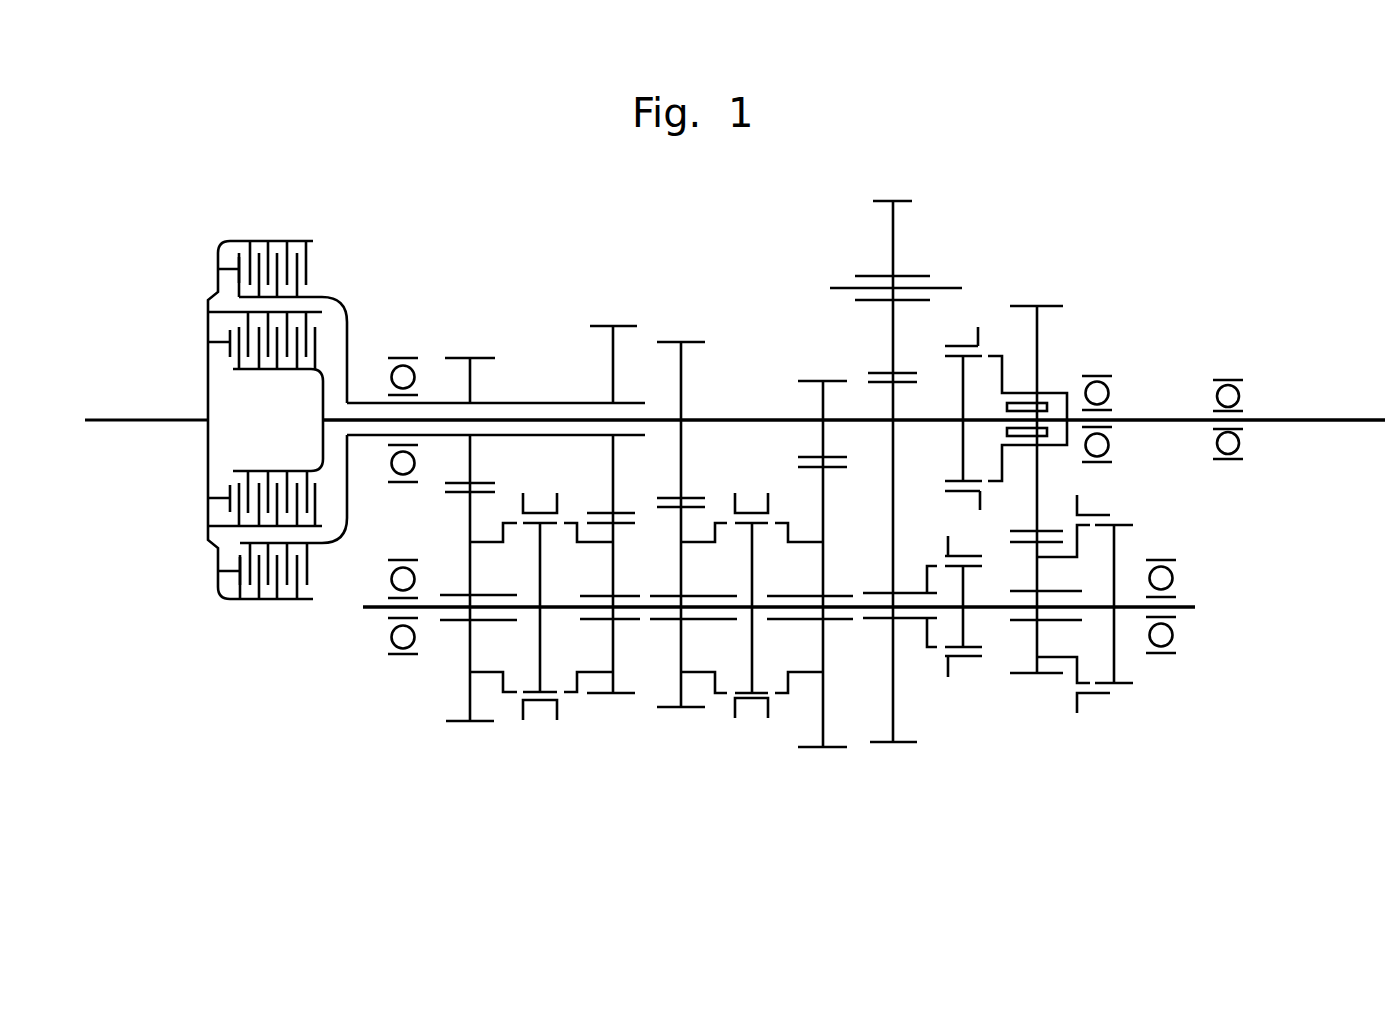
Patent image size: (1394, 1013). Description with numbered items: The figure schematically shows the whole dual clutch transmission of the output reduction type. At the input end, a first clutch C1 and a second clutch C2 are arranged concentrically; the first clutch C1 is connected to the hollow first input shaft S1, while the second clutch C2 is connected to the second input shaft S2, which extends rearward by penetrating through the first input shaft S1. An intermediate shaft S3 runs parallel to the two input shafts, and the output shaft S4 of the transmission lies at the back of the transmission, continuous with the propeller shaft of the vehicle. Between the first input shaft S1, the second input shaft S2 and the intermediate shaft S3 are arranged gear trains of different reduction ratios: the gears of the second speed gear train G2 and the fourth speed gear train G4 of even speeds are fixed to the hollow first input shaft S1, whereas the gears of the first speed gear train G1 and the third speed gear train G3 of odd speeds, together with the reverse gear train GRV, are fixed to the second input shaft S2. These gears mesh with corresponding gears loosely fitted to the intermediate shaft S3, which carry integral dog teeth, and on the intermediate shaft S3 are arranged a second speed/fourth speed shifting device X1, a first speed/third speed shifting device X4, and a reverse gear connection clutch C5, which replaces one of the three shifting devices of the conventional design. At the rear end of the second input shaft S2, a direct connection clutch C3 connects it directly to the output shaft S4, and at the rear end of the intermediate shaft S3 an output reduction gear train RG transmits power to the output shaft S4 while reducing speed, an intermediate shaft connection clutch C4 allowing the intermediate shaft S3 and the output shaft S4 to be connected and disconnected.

The first clutch C1 is at (280, 252).
The second clutch C2 is at (240, 327).
The direct connection clutch C3 is at (978, 327).
The intermediate shaft connection clutch C4 is at (1097, 697).
The reverse gear connection clutch C5 is at (955, 660).
The first input shaft S1 is at (533, 403).
The second input shaft S2 is at (733, 418).
The intermediate shaft S3 is at (375, 612).
The output shaft S4 is at (1282, 418).
The first speed gear train G1 is at (812, 749).
The second speed gear train G2 is at (457, 728).
The third speed gear train G3 is at (672, 709).
The fourth speed gear train G4 is at (597, 696).
The second speed/fourth speed shifting device X1 is at (535, 706).
The first speed/third speed shifting device X4 is at (745, 706).
The output reduction gear train RG is at (1022, 676).
The reverse gear train GRV is at (885, 745).